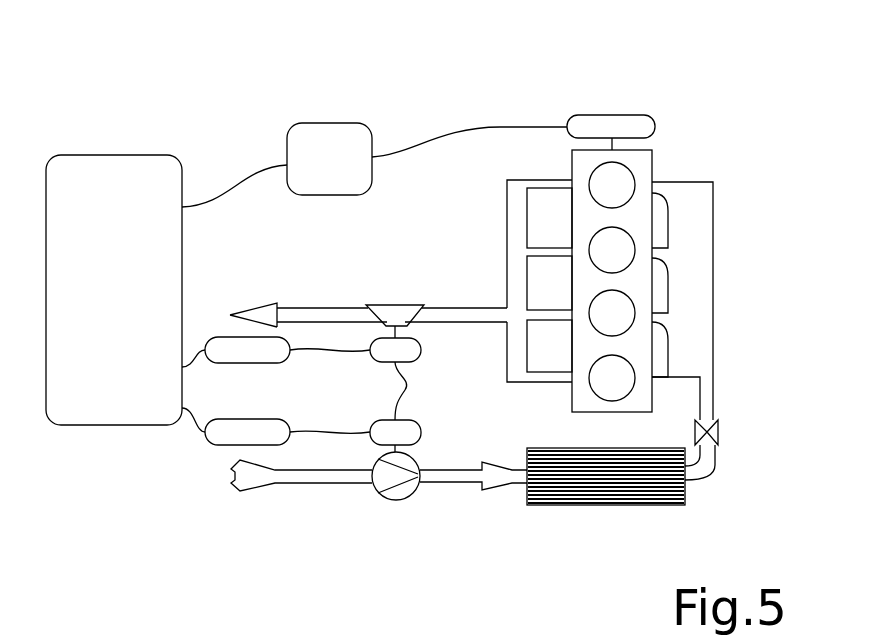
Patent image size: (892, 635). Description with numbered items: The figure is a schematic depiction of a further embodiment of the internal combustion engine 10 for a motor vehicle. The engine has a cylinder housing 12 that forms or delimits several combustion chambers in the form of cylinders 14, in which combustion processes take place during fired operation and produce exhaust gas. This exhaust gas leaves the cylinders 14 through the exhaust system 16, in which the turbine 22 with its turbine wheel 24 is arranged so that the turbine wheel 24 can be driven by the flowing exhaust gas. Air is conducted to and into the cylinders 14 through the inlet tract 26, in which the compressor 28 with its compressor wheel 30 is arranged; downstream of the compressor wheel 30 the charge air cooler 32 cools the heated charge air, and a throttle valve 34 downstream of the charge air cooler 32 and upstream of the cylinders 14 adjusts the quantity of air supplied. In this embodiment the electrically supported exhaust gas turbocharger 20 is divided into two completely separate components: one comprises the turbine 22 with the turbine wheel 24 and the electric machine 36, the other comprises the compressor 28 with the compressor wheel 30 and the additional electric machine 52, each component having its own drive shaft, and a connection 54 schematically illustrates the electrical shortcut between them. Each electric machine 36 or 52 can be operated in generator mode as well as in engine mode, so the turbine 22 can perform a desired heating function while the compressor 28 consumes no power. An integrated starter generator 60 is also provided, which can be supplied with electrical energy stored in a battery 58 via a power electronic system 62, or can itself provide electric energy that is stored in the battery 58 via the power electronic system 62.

The internal combustion engine 10 is at (676, 131).
The cylinder housing 12 is at (582, 165).
The cylinders 14 is at (638, 178).
The exhaust system 16 is at (250, 289).
The exhaust gas turbocharger 20 is at (383, 520).
The turbine 22 is at (447, 267).
The turbine wheel 24 is at (395, 305).
The inlet tract 26 is at (457, 495).
The compressor 28 is at (362, 499).
The compressor wheel 30 is at (417, 459).
The charge air cooler 32 is at (685, 492).
The throttle valve 34 is at (720, 432).
The electric machine 36 is at (440, 357).
The electric machine 52 is at (440, 421).
The connection 54 is at (405, 388).
The battery 58 is at (112, 427).
The integrated starter generator 60 is at (630, 115).
The power electronic system 62 is at (325, 123).